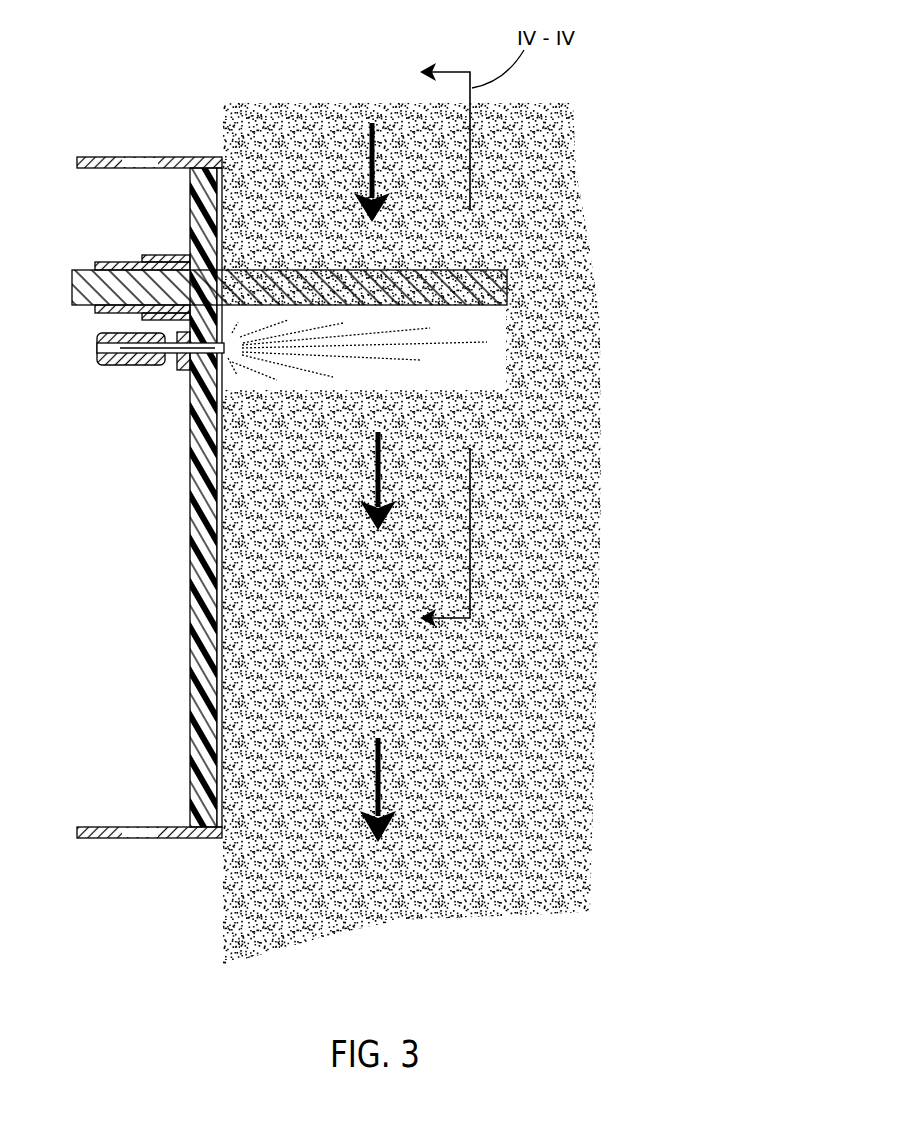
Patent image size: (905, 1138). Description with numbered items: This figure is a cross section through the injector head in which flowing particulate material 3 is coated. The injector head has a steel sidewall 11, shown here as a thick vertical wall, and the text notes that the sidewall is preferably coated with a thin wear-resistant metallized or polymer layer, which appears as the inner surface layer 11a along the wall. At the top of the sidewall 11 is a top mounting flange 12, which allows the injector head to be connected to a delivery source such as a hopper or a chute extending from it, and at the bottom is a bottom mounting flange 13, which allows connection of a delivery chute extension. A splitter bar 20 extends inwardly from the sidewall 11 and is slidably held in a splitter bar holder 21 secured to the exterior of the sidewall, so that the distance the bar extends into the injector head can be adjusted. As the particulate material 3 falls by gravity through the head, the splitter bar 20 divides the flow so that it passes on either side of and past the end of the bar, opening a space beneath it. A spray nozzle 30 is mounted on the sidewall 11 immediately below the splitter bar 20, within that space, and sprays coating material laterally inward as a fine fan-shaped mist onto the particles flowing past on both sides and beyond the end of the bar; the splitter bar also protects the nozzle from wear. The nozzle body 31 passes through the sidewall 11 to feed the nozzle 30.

The particulate material 3 is at (555, 181).
The sidewall 11 is at (195, 512).
The inner surface of side wall 11a is at (218, 552).
The top mounting flange 12 is at (95, 157).
The bottom mounting flange 13 is at (97, 826).
The splitter bar 20 is at (72, 288).
The splitter bar holder 21 is at (163, 261).
The spray nozzle 30 is at (190, 393).
The nozzle body 31 is at (127, 366).